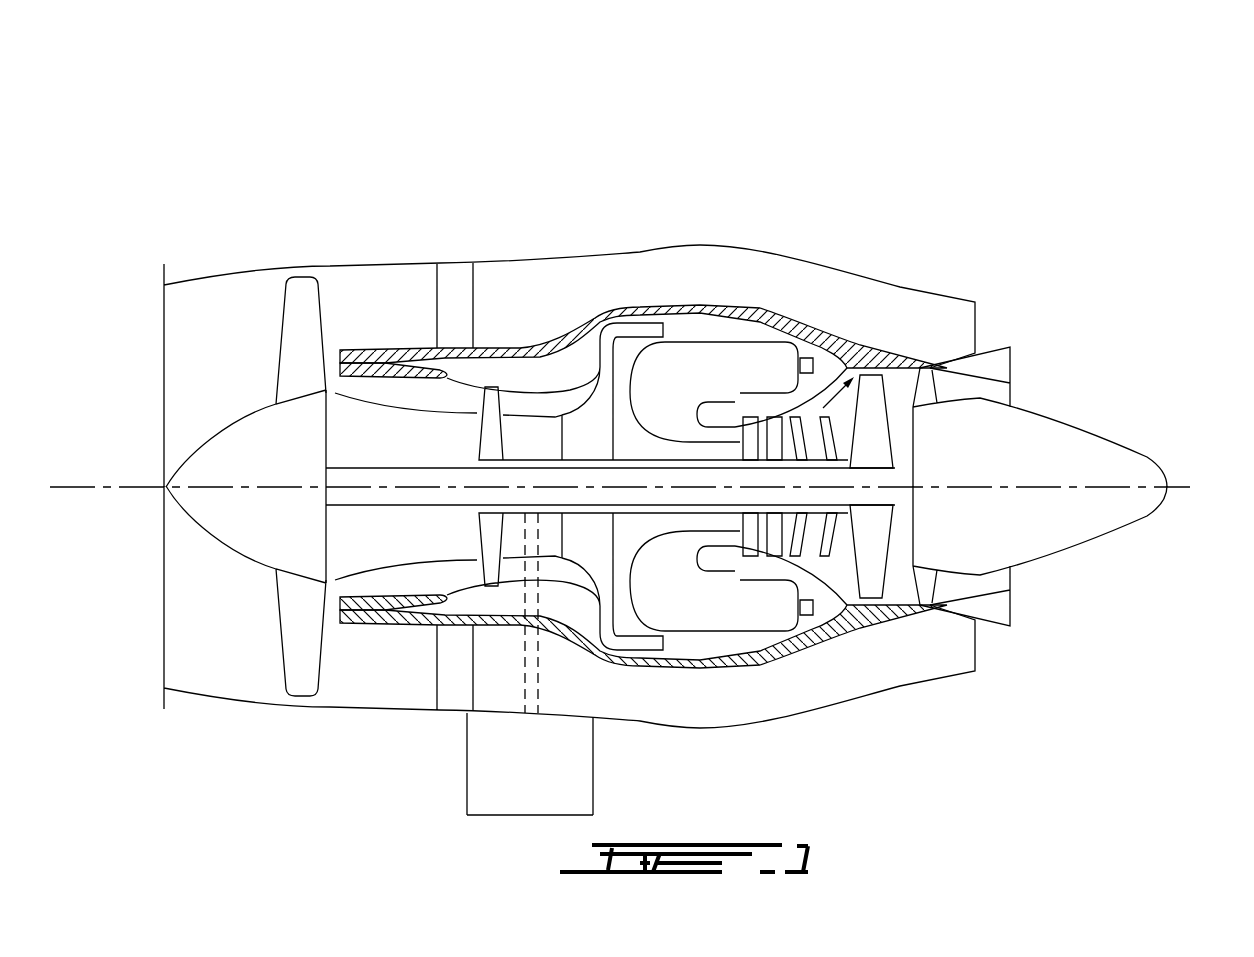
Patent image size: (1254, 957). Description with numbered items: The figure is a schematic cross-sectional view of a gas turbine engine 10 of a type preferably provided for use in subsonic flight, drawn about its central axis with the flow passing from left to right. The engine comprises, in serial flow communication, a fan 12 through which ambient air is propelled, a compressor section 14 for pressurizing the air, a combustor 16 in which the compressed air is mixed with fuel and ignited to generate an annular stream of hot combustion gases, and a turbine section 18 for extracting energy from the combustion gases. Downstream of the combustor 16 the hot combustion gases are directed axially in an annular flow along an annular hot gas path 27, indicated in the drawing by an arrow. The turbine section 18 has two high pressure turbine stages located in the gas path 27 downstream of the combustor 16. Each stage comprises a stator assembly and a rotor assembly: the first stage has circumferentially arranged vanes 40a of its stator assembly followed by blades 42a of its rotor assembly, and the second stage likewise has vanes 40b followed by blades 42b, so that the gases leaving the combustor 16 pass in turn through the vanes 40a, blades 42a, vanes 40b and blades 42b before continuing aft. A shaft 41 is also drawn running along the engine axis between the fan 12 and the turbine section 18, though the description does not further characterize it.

The gas turbine engine 10 is at (930, 167).
The fan 12 is at (297, 623).
The compressor section 14 is at (547, 403).
The combustor 16 is at (717, 360).
The turbine section 18 is at (840, 553).
The annular hot gas path 27 is at (833, 388).
The vane 40a is at (753, 425).
The blade 42a is at (772, 425).
The vane 40b is at (797, 422).
The blade 42b is at (810, 427).
The shaft 41 is at (345, 467).